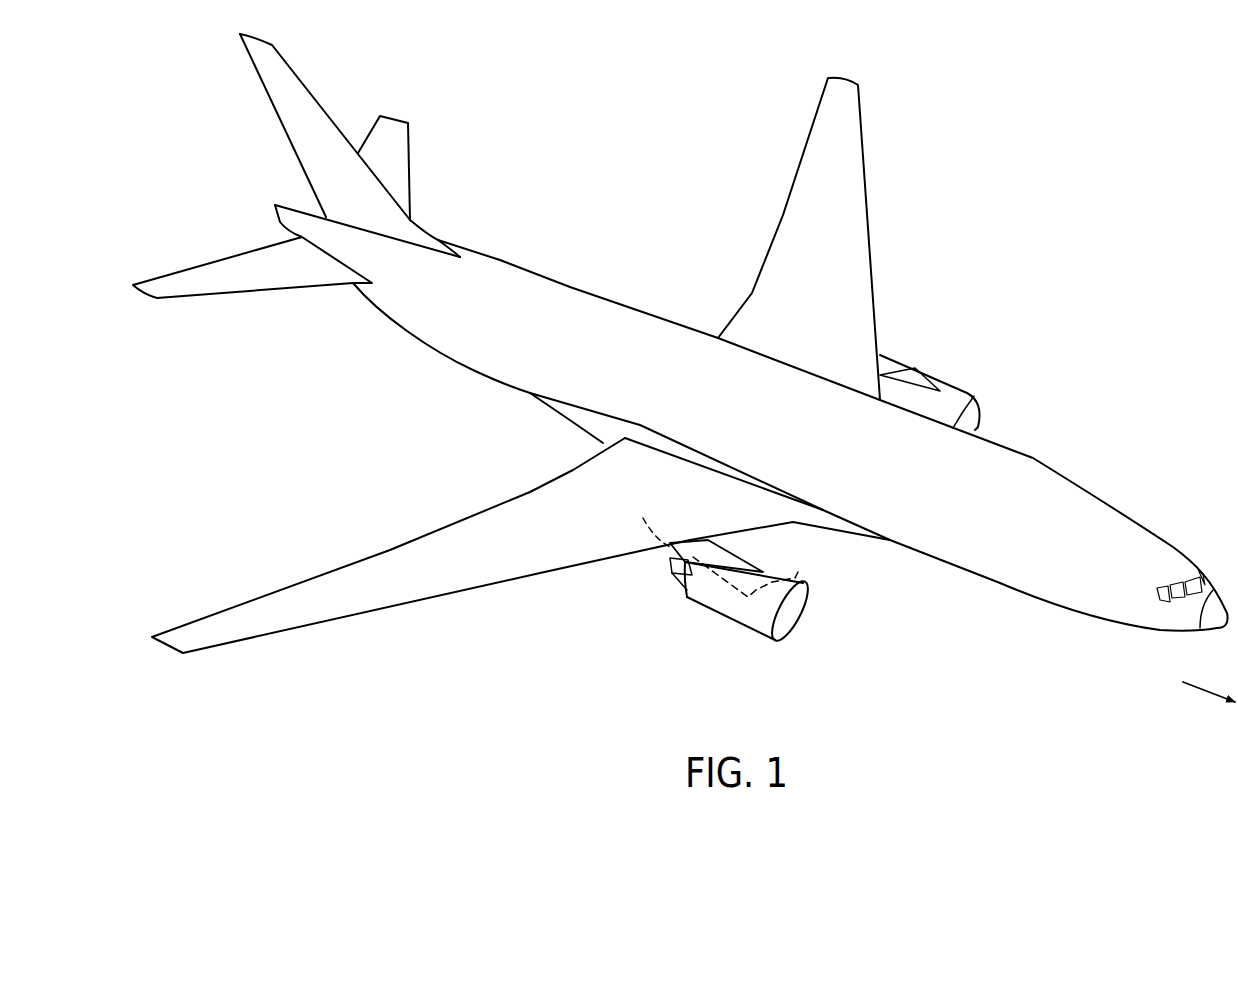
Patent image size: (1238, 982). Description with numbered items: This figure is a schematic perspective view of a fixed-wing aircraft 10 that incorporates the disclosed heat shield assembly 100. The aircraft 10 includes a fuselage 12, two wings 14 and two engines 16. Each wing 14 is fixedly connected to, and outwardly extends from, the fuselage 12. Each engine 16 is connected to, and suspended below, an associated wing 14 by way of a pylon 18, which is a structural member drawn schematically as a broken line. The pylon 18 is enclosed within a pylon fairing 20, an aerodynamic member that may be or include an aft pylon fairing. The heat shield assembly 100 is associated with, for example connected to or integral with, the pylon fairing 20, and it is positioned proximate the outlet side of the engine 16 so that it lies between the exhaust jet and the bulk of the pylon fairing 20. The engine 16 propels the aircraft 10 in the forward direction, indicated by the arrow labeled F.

The fixed-wing aircraft 10 is at (1110, 151).
The fuselage 12 is at (570, 287).
The wing 14 is at (790, 223).
The engine 16 is at (940, 373).
The pylon 18 is at (797, 577).
The pylon fairing 20 is at (660, 555).
The heat shield assembly 100 is at (672, 575).